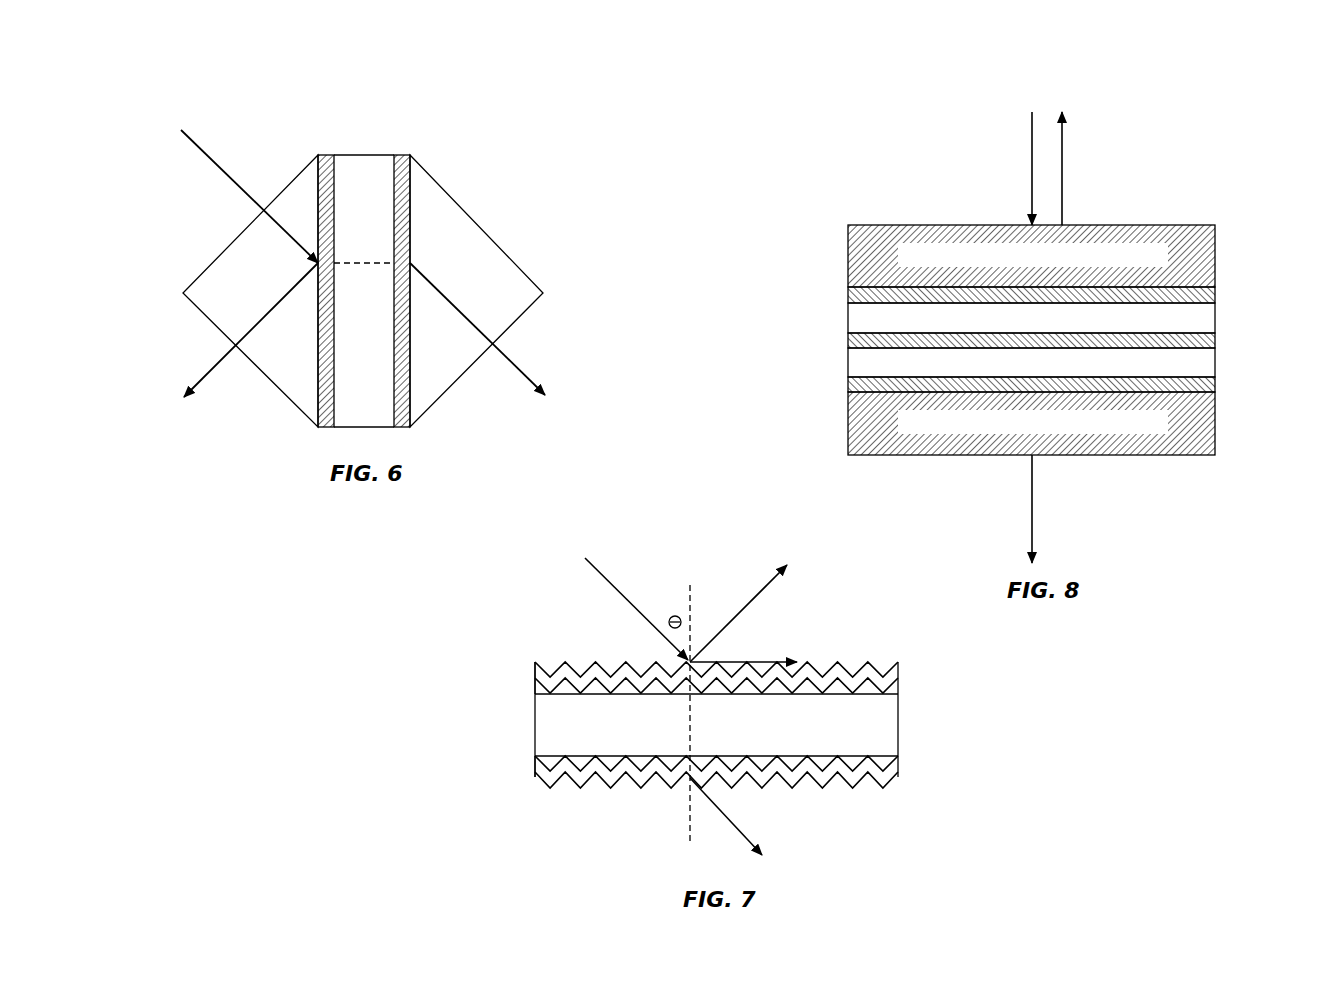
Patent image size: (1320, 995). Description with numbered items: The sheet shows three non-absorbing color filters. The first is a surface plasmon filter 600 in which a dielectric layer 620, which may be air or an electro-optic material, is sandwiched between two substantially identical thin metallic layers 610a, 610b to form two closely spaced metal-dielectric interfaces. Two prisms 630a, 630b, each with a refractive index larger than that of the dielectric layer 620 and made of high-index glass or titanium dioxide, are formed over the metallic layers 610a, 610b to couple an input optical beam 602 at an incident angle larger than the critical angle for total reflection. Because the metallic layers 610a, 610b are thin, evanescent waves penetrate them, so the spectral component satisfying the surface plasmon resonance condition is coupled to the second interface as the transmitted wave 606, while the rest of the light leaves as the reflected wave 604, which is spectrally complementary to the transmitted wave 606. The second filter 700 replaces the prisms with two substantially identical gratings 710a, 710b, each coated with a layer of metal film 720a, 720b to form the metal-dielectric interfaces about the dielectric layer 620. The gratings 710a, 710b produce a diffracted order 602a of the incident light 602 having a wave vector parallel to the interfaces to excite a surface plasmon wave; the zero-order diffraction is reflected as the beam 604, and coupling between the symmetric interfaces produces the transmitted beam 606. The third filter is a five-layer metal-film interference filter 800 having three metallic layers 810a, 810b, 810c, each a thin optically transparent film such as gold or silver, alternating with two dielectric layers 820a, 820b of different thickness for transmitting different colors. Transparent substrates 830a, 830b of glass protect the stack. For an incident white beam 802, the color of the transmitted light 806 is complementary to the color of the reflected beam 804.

In FIG. 6, the surface plasmon filter 600 is at (193, 102).
In FIG. 6, the input optical beam 602 is at (202, 156).
In FIG. 7, the input optical beam 602 is at (623, 595).
In FIG. 6, the reflected wave 604 is at (198, 378).
In FIG. 7, the reflected wave 604 is at (770, 578).
In FIG. 6, the transmitted wave 606 is at (523, 383).
In FIG. 7, the transmitted wave 606 is at (745, 847).
In FIG. 6, the metallic layer 610a is at (323, 155).
In FIG. 6, the metallic layer 610b is at (404, 155).
In FIG. 6, the dielectric layer 620 is at (364, 291).
In FIG. 7, the dielectric layer 620 is at (716, 719).
In FIG. 6, the prism 630a is at (250, 291).
In FIG. 6, the prism 630b is at (476, 291).
In FIG. 7, the non-absorbing color filter 700 is at (525, 594).
In FIG. 7, the refracted light component 602a is at (758, 658).
In FIG. 7, the grating 710a is at (898, 662).
In FIG. 7, the grating 710b is at (898, 770).
In FIG. 7, the metal film 720a is at (535, 676).
In FIG. 7, the metal film 720b is at (535, 752).
In FIG. 8, the metal-film interference filter 800 is at (902, 160).
In FIG. 8, the incident white beam 802 is at (1032, 112).
In FIG. 8, the reflected beam 804 is at (1062, 140).
In FIG. 8, the transmitted light 806 is at (1033, 510).
In FIG. 8, the metallic layer 810a is at (1215, 292).
In FIG. 8, the metallic layer 810b is at (1215, 338).
In FIG. 8, the metallic layer 810c is at (1215, 382).
In FIG. 8, the dielectric layer 820a is at (1031, 318).
In FIG. 8, the dielectric layer 820b is at (1031, 362).
In FIG. 8, the transparent substrate 830a is at (848, 258).
In FIG. 8, the transparent substrate 830b is at (848, 422).